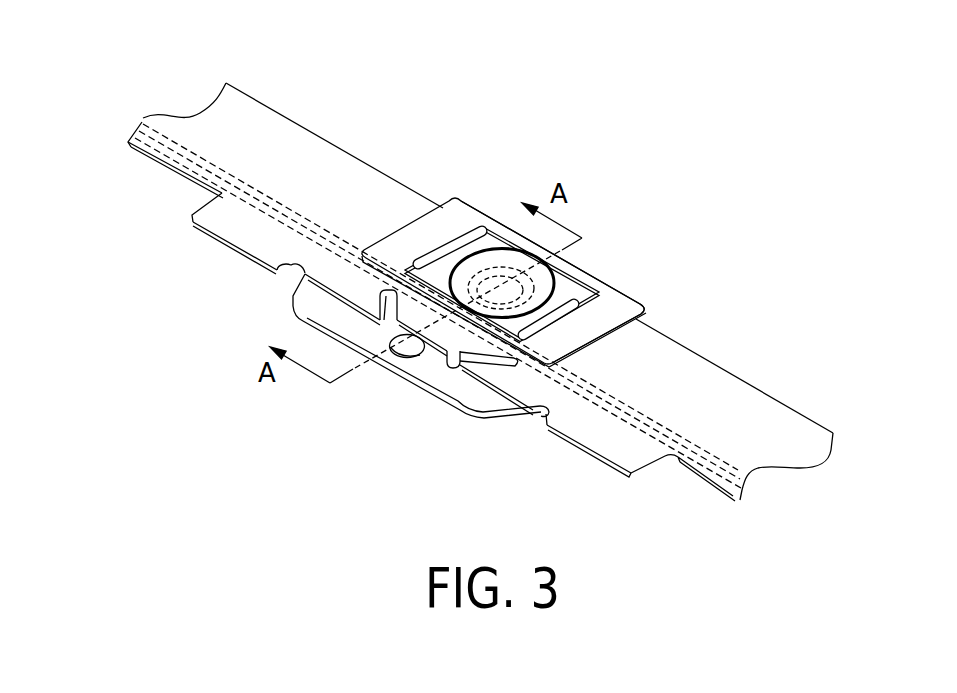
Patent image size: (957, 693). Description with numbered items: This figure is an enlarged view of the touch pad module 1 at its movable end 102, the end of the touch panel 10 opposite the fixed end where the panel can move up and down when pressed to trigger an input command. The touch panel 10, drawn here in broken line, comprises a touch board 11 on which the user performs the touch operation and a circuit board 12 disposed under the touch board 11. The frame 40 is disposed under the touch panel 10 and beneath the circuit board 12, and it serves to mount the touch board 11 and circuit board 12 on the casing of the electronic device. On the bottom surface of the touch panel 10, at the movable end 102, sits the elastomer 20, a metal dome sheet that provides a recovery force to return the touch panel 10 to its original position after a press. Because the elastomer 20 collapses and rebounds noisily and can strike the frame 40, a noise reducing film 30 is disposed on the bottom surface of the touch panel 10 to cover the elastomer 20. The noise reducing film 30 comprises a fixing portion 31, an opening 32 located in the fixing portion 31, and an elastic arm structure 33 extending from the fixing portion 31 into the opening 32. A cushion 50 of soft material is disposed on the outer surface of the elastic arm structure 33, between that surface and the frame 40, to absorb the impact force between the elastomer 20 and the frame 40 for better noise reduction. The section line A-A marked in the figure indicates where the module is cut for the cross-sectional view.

The touch pad module 1 is at (171, 48).
The touch panel 10 is at (486, 292).
The movable end 102 is at (136, 113).
The touch board 11 is at (144, 152).
The circuit board 12 is at (174, 160).
The elastomer 20 is at (477, 288).
The noise reducing film 30 is at (463, 200).
The fixing portion 31 is at (450, 208).
The opening 32 is at (607, 288).
The elastic arm structure 33 is at (557, 284).
The frame 40 is at (220, 234).
The cushion 50 is at (477, 322).